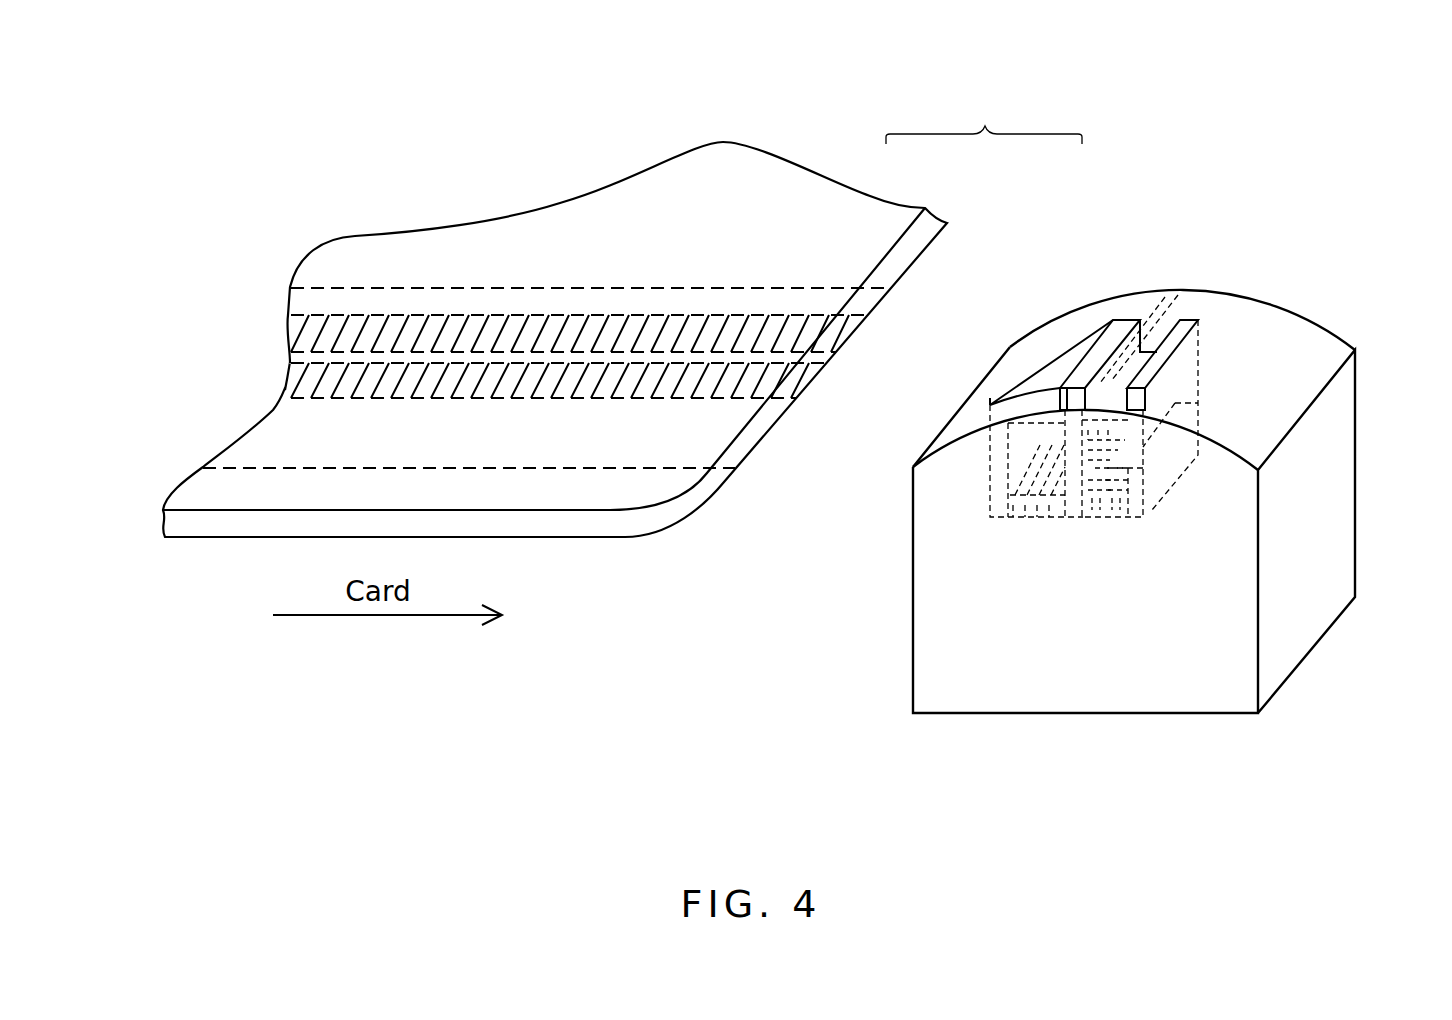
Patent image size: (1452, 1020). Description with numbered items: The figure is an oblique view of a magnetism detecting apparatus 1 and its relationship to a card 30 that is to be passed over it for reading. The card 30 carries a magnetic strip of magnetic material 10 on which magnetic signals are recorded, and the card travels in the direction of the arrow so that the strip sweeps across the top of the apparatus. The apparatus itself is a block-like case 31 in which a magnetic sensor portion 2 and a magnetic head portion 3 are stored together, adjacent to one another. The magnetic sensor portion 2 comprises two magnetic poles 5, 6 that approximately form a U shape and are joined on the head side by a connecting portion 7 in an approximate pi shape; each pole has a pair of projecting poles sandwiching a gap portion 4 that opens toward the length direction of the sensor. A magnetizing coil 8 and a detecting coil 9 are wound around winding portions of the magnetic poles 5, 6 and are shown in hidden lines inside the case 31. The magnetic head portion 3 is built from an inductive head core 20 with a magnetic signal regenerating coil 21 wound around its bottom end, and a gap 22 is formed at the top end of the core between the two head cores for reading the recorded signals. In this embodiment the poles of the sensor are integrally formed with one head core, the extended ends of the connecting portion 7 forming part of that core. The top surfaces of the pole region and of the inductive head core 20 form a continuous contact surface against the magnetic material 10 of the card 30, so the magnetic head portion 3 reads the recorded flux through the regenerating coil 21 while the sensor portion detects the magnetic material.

The magnetism detecting apparatus 1 is at (1040, 678).
The magnetic sensor portion 2 is at (1221, 383).
The magnetic head portion 3 is at (1061, 351).
The gap portion 4 is at (1165, 322).
The magnetic pole 5 is at (1206, 340).
The magnetic pole 6 is at (1204, 421).
The connecting portion 7 is at (1075, 480).
The magnetizing coil 8 is at (1112, 495).
The detecting coil 9 is at (1092, 495).
The magnetic material 10 is at (810, 383).
The inductive head core 20 is at (998, 463).
The magnetic signal regenerating coil 21 is at (1013, 522).
The gap 22 is at (1118, 319).
The card 30 is at (668, 183).
The case 31 is at (1300, 525).